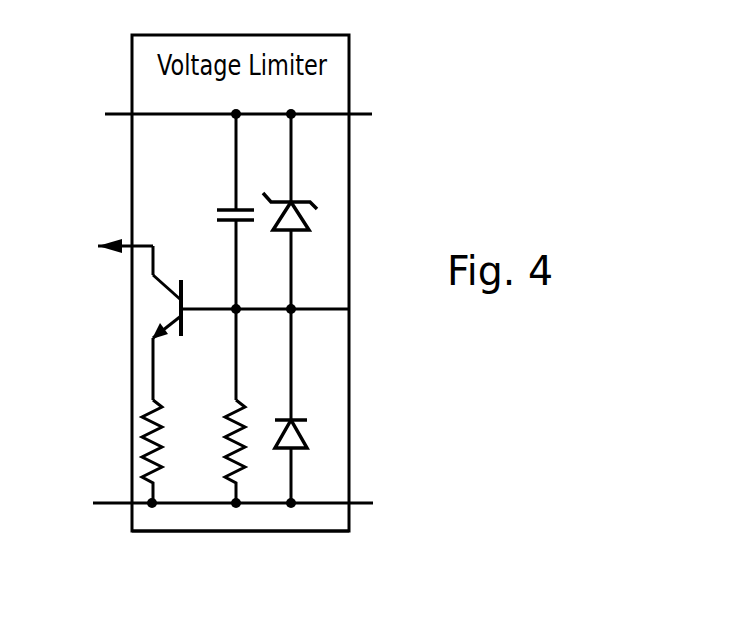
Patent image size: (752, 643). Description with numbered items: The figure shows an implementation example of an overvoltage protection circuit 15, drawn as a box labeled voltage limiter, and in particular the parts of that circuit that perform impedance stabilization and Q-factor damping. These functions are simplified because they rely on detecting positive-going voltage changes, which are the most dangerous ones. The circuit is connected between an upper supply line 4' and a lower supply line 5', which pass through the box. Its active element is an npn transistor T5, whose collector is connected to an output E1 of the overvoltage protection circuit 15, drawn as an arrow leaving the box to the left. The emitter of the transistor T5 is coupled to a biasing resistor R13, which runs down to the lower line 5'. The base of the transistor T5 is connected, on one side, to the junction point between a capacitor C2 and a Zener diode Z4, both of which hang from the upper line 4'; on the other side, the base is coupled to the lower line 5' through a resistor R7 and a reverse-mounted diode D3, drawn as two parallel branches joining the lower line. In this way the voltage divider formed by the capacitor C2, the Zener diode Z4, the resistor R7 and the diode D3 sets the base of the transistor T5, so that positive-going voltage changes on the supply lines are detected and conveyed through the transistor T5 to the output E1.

The upper supply line 4' is at (224, 86).
The lower supply line 5' is at (232, 533).
The overvoltage protection circuit 15 is at (268, 533).
The output E1 is at (106, 254).
The npn transistor T5 is at (184, 279).
The capacitor C2 is at (227, 208).
The Zener diode Z4 is at (300, 205).
The biasing resistor R13 is at (153, 413).
The resistor R7 is at (227, 435).
The reverse-mounted diode D3 is at (303, 447).